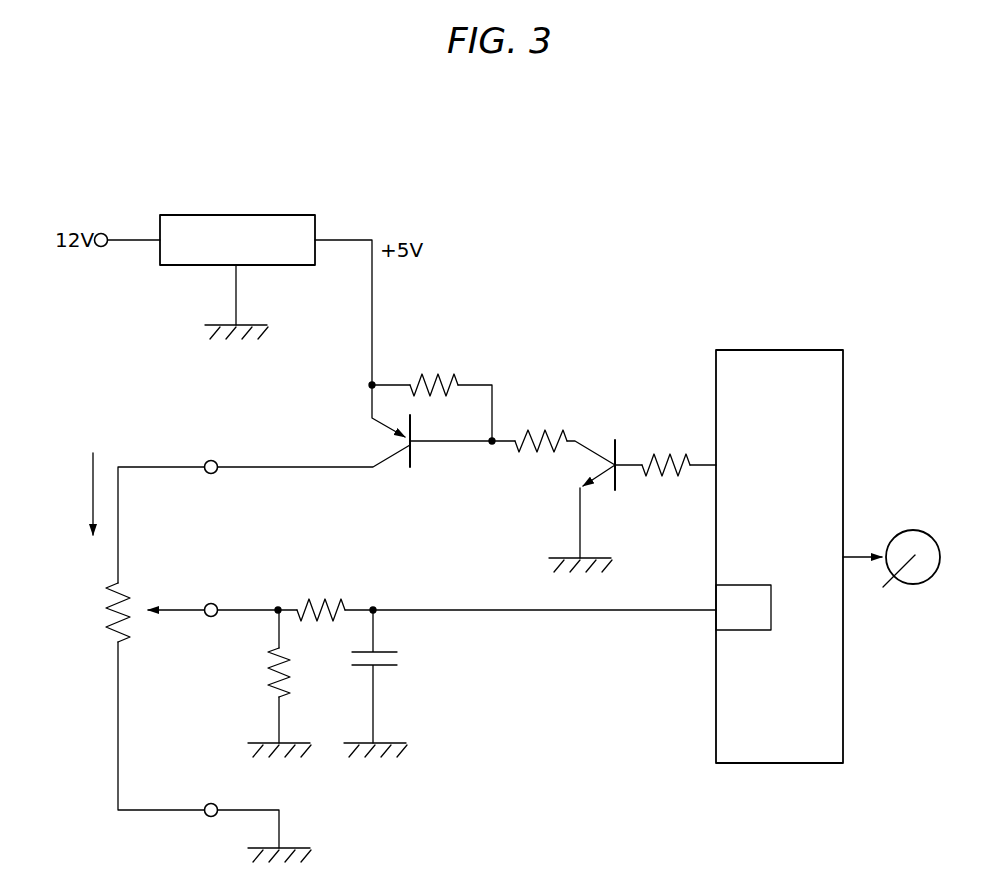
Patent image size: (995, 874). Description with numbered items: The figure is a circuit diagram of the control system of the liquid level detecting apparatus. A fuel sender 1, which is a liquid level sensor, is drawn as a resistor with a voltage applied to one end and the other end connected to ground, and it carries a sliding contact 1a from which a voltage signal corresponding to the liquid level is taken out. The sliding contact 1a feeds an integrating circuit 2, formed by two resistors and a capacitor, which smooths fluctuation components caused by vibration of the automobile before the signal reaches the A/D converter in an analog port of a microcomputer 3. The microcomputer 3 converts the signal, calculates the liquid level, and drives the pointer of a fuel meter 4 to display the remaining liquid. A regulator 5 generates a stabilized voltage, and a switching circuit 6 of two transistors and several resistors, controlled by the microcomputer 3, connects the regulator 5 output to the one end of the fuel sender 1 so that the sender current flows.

The fuel sender 1 is at (107, 613).
The sliding contact 1a is at (132, 595).
The integrating circuit 2 is at (336, 786).
The microcomputer 3 is at (781, 350).
The fuel meter 4 is at (913, 530).
The regulator 5 is at (236, 215).
The switching circuit 6 is at (523, 372).